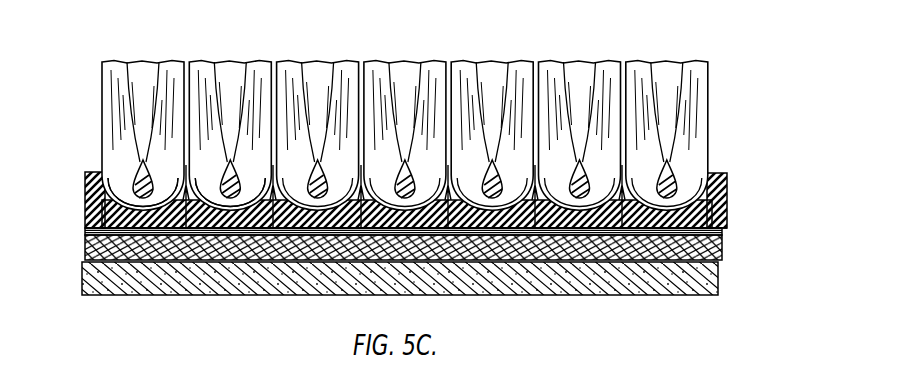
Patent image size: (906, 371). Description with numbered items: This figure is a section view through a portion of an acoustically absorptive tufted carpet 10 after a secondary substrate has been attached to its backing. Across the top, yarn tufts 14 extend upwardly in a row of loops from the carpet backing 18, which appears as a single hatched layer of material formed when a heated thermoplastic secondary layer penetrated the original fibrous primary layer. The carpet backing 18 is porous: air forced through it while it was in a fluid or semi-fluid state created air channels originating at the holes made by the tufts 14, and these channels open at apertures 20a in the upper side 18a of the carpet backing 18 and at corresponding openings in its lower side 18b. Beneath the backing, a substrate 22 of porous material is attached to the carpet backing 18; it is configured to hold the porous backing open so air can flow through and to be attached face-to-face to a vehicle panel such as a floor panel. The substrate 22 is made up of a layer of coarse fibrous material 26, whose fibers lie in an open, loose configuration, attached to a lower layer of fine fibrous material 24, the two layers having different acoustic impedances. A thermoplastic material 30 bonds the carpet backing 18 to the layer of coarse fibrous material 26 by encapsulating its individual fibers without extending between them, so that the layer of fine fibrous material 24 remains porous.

The acoustically absorptive tufted carpet 10 is at (412, 163).
The yarn tufts 14 is at (405, 135).
The carpet backing 18 is at (413, 188).
The first side of the carpet backing 18a is at (715, 172).
The second side of the carpet backing 18b is at (710, 232).
The apertures 20a is at (100, 180).
The substrate 22 is at (407, 267).
The layer of fine fibrous material 24 is at (82, 279).
The layer of coarse fibrous material 26 is at (88, 243).
The thermoplastic material 30 is at (88, 232).